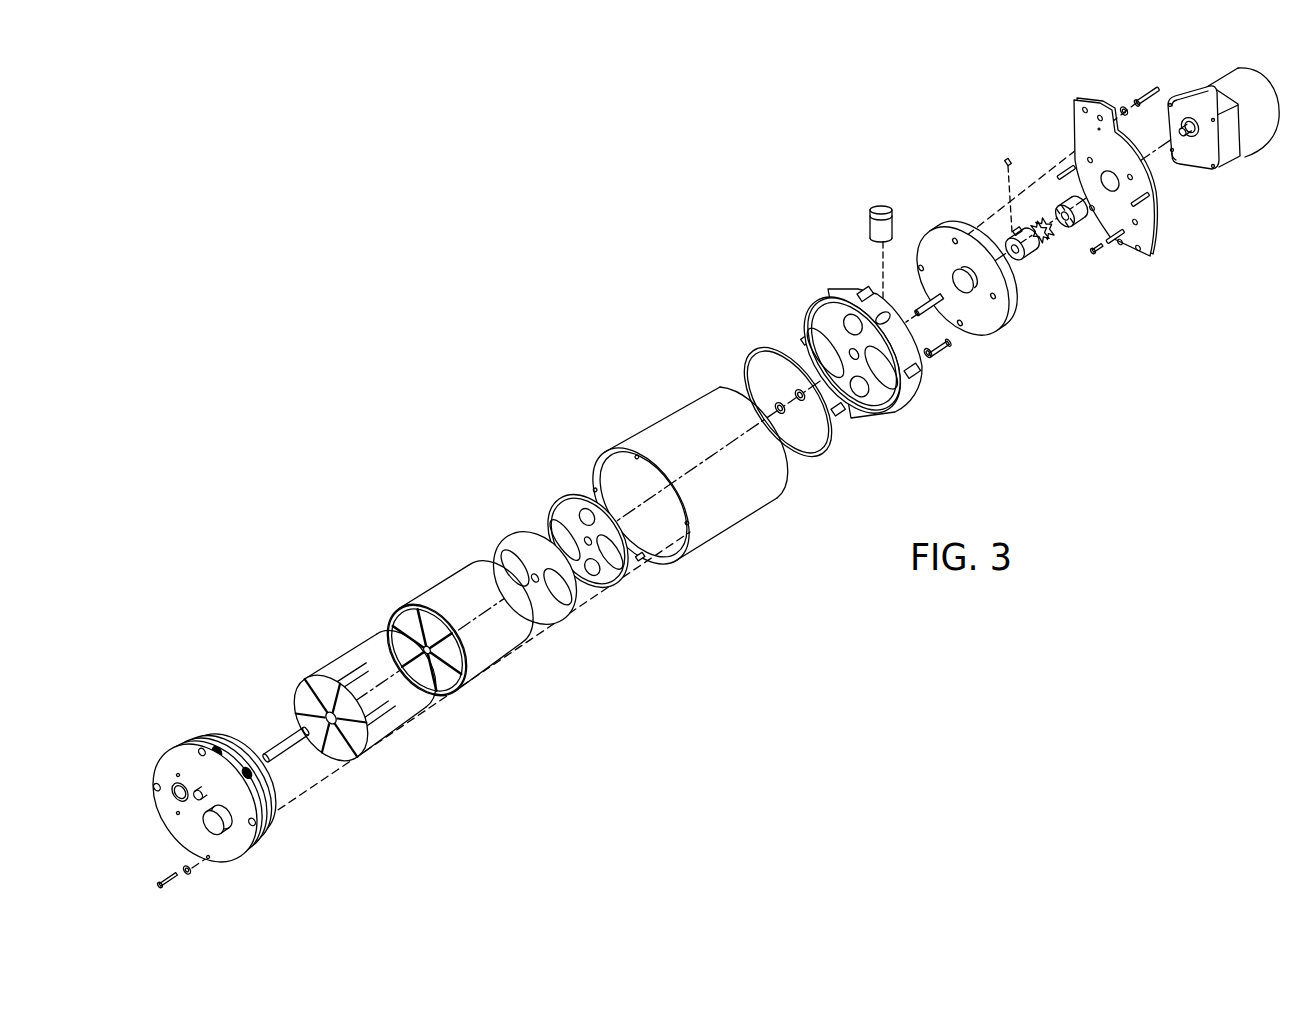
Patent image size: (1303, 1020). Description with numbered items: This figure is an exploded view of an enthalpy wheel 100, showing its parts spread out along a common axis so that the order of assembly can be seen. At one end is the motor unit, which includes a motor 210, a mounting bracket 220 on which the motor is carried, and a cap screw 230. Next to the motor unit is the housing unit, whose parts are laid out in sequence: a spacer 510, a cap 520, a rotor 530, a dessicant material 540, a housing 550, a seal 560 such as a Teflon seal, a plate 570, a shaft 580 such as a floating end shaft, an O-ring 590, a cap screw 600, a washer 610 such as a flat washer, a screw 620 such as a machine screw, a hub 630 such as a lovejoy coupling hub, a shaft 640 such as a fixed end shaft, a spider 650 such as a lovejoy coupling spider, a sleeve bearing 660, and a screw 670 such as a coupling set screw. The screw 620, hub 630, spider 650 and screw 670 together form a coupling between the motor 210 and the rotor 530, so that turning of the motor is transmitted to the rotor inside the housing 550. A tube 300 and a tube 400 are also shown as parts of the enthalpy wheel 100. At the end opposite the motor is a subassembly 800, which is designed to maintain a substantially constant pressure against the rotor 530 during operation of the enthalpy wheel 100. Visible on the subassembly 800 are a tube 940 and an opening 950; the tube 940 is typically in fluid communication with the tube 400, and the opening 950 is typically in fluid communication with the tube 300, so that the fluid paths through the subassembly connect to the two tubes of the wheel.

The enthalpy wheel 100 is at (660, 330).
The motor 210 is at (1233, 164).
The mounting bracket 220 is at (1152, 234).
The cap screw 230 is at (1140, 99).
The tube 300 is at (871, 204).
The tube 400 is at (847, 411).
The spacer 510 is at (998, 322).
The cap 520 is at (828, 299).
The rotor 530 is at (493, 668).
The dessicant material 540 is at (337, 660).
The housing 550 is at (733, 518).
The seal 560 is at (797, 390).
The plate 570 is at (503, 540).
The shaft 580 is at (276, 745).
The O-ring 590 is at (820, 452).
The cap screw 600 is at (948, 345).
The washer 610 is at (931, 359).
The screw 620 is at (1101, 253).
The hub 630 is at (1023, 254).
The shaft 640 is at (916, 312).
The spider 650 is at (1048, 238).
The sleeve bearing 660 is at (776, 404).
The screw 670 is at (1005, 159).
The subassembly 800 is at (189, 746).
The tube 940 is at (232, 823).
The opening 950 is at (180, 793).